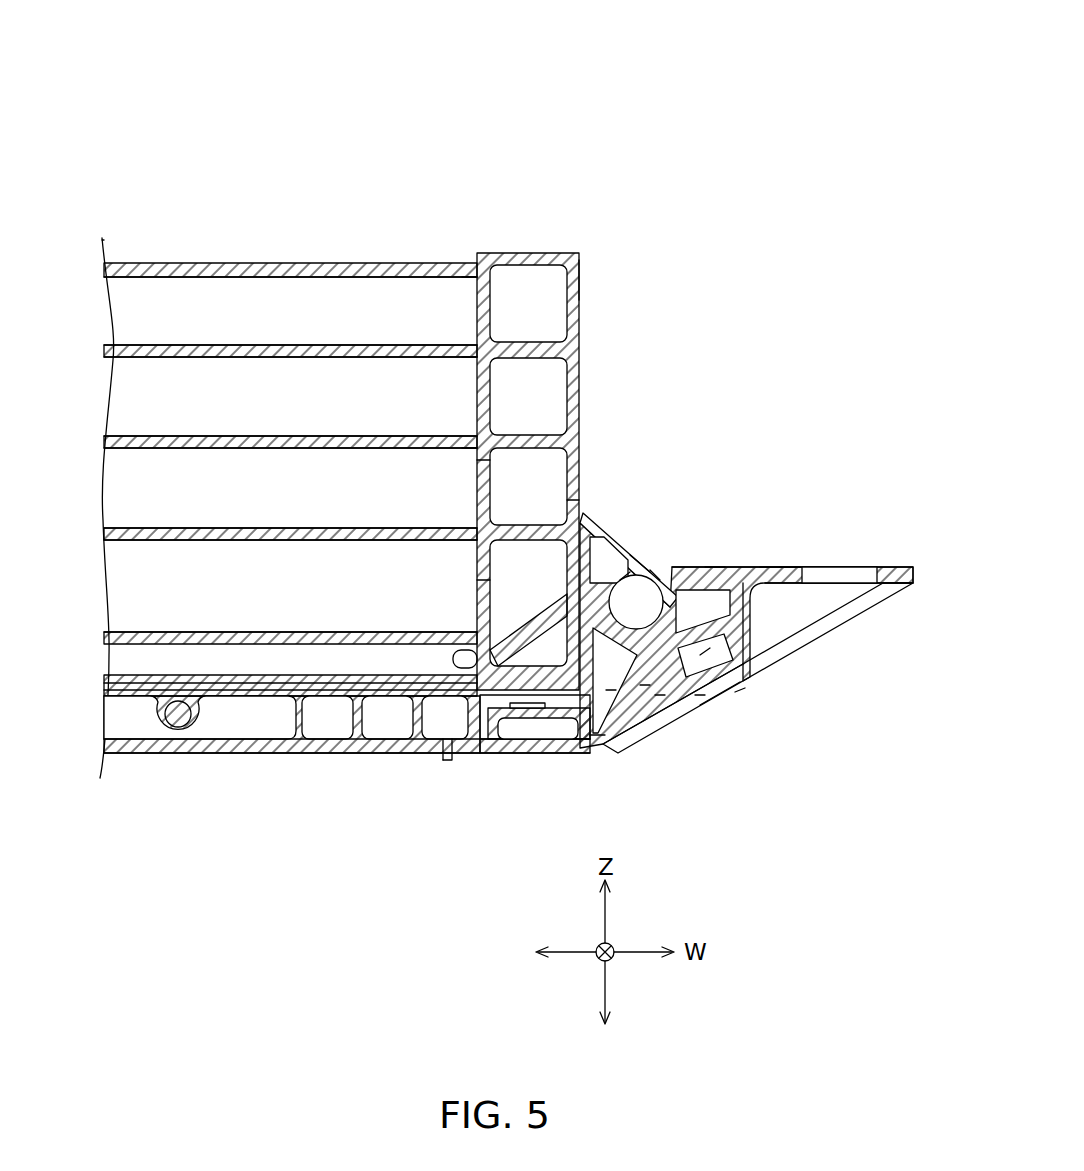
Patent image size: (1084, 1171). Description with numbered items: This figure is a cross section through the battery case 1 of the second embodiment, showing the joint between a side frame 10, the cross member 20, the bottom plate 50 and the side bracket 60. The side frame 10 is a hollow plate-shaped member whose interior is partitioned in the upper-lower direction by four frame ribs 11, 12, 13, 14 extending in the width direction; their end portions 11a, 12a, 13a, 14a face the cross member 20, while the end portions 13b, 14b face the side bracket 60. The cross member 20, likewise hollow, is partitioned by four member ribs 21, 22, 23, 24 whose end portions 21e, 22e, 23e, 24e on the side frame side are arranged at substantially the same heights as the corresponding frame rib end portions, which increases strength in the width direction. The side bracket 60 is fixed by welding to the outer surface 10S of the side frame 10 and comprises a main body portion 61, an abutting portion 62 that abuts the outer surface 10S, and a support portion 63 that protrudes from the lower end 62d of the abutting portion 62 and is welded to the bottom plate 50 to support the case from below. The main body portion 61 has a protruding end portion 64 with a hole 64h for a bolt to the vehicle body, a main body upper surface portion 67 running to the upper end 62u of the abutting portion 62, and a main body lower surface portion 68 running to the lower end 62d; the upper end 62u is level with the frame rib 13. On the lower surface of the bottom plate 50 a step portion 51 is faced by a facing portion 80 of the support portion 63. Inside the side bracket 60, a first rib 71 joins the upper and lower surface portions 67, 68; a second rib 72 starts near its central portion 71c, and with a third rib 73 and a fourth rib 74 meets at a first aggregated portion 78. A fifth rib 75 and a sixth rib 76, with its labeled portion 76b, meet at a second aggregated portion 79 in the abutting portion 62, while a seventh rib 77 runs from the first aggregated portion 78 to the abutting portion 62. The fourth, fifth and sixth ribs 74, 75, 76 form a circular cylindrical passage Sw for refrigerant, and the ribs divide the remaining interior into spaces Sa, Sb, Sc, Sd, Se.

The battery case 1 is at (429, 92).
The side frame 10 is at (528, 228).
The outer surface 10S is at (583, 282).
The frame rib 11 is at (550, 354).
The end portion 11a is at (497, 335).
The frame rib 12 is at (542, 440).
The end portion 12a is at (497, 428).
The frame rib 13 is at (518, 520).
The end portion 13a is at (490, 498).
The end portion 13b is at (578, 520).
The frame rib 14 is at (516, 642).
The end portion 14a is at (490, 600).
The end portion 14b is at (548, 608).
The cross member 20 is at (262, 242).
The member rib 21 is at (150, 338).
The end portion 21e is at (472, 340).
The member rib 22 is at (150, 430).
The end portion 22e is at (472, 432).
The member rib 23 is at (150, 520).
The end portion 23e is at (477, 522).
The member rib 24 is at (150, 630).
The end portion 24e is at (477, 630).
The bottom plate 50 is at (165, 753).
The step portion 51 is at (440, 760).
The side bracket 60 is at (790, 504).
The main body portion 61 is at (792, 555).
The abutting portion 62 is at (596, 528).
The upper end 62u is at (610, 536).
The lower end 62d is at (600, 750).
The support portion 63 is at (520, 765).
The protruding end portion 64 is at (917, 573).
The hole 64h is at (850, 567).
The main body upper surface portion 67 is at (820, 567).
The main body lower surface portion 68 is at (722, 700).
The first rib 71 is at (755, 645).
The central portion 71c is at (800, 630).
The second rib 72 is at (712, 660).
The third rib 73 is at (730, 600).
The fourth rib 74 is at (700, 590).
The fifth rib 75 is at (643, 583).
The sixth rib 76 is at (596, 745).
The lower recess 76b is at (737, 660).
The seventh rib 77 is at (660, 700).
The first aggregated portion 78 is at (655, 565).
The second aggregated portion 79 is at (548, 756).
The facing portion 80 is at (452, 764).
The space Sa is at (715, 562).
The space Sb is at (740, 700).
The space Sc is at (645, 690).
The space Sd is at (612, 700).
The space Se is at (642, 553).
The cylindrical passage Sw is at (700, 700).